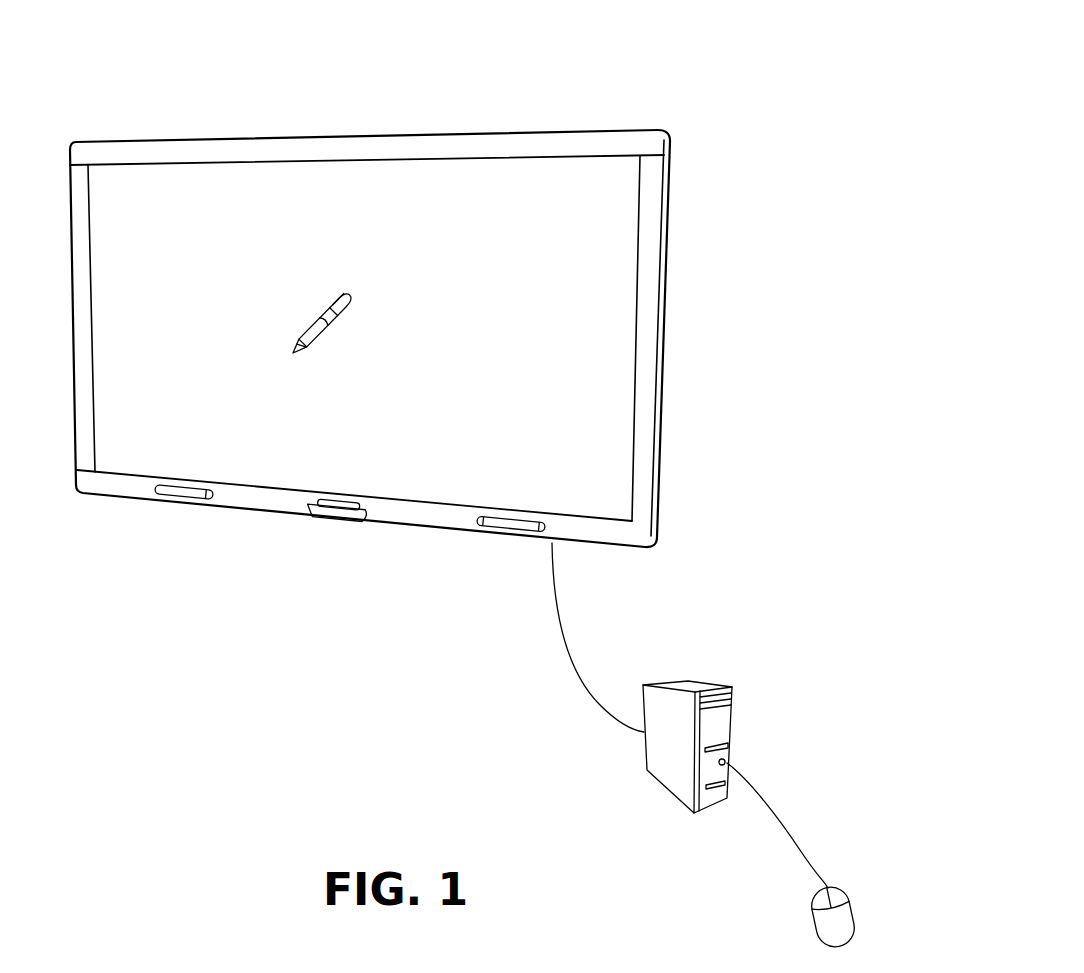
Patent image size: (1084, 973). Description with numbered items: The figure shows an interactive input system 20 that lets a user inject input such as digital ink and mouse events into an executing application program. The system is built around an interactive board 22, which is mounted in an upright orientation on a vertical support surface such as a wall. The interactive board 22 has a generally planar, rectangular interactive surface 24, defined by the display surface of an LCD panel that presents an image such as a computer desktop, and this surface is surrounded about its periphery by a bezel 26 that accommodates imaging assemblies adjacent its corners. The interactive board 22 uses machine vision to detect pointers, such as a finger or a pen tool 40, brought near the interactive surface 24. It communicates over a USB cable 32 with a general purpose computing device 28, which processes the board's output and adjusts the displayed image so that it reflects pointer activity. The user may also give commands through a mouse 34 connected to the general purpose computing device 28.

The interactive input system 20 is at (693, 94).
The interactive board 22 is at (684, 270).
The interactive surface 24 is at (593, 355).
The bezel 26 is at (644, 433).
The general purpose computing device 28 is at (678, 799).
The universal serial bus (USB) cable 32 is at (582, 689).
The mouse 34 is at (818, 915).
The pen tool 40 is at (338, 309).